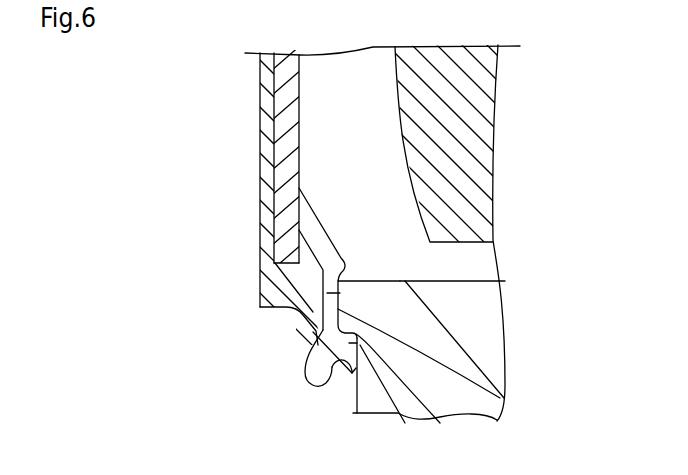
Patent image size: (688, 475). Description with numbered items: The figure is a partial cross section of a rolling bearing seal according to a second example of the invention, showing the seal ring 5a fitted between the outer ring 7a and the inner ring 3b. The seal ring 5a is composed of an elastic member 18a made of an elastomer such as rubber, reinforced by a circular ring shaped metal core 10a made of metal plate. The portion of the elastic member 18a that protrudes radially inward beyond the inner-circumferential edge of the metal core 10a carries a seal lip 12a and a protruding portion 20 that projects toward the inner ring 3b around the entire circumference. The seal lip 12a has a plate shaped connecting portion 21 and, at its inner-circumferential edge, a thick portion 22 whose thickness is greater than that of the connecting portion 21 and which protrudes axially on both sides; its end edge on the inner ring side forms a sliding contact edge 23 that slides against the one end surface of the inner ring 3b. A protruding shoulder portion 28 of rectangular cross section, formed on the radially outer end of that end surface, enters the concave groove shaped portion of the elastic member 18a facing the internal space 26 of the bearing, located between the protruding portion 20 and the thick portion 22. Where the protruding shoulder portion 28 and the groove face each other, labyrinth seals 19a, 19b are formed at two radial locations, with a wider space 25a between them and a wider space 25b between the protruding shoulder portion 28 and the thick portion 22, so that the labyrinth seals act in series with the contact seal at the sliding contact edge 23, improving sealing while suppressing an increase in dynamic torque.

The seal ring 5a is at (256, 161).
The metal core 10a is at (290, 84).
The elastic member 18a is at (270, 120).
The seal lip 12a is at (306, 333).
The housing wall 7a is at (473, 82).
The internal space 26 is at (381, 83).
The protruding portion 20 is at (346, 255).
The labyrinth seal 19a is at (340, 280).
The labyrinth seal 19b is at (314, 349).
The inner ring 3b is at (470, 332).
The protruding shoulder portion 28 is at (321, 291).
The connecting portion 21 is at (300, 325).
The thick portion 22 is at (324, 377).
The sliding contact edge 23 is at (358, 363).
The space 25a is at (500, 399).
The space 25b is at (415, 408).